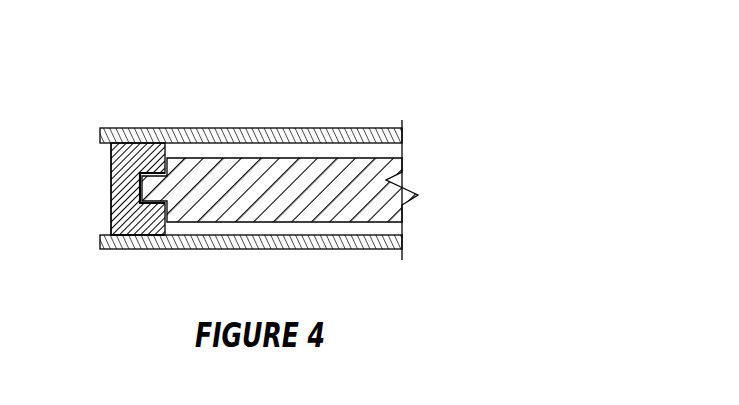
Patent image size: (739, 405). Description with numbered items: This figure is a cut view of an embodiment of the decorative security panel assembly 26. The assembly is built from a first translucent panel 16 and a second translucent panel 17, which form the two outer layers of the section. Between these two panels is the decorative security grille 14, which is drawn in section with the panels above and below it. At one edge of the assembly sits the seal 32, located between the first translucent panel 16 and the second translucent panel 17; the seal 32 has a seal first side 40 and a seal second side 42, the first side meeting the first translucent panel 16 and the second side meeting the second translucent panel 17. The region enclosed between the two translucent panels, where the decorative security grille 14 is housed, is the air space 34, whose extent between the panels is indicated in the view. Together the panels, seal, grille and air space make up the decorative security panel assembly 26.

The decorative security panel assembly 26 is at (389, 82).
The decorative security grille 14 is at (252, 172).
The first translucent panel 16 is at (336, 133).
The second translucent panel 17 is at (317, 246).
The seal first side 40 is at (142, 132).
The seal 32 is at (120, 185).
The seal second side 42 is at (142, 238).
The air space 34 is at (404, 150).